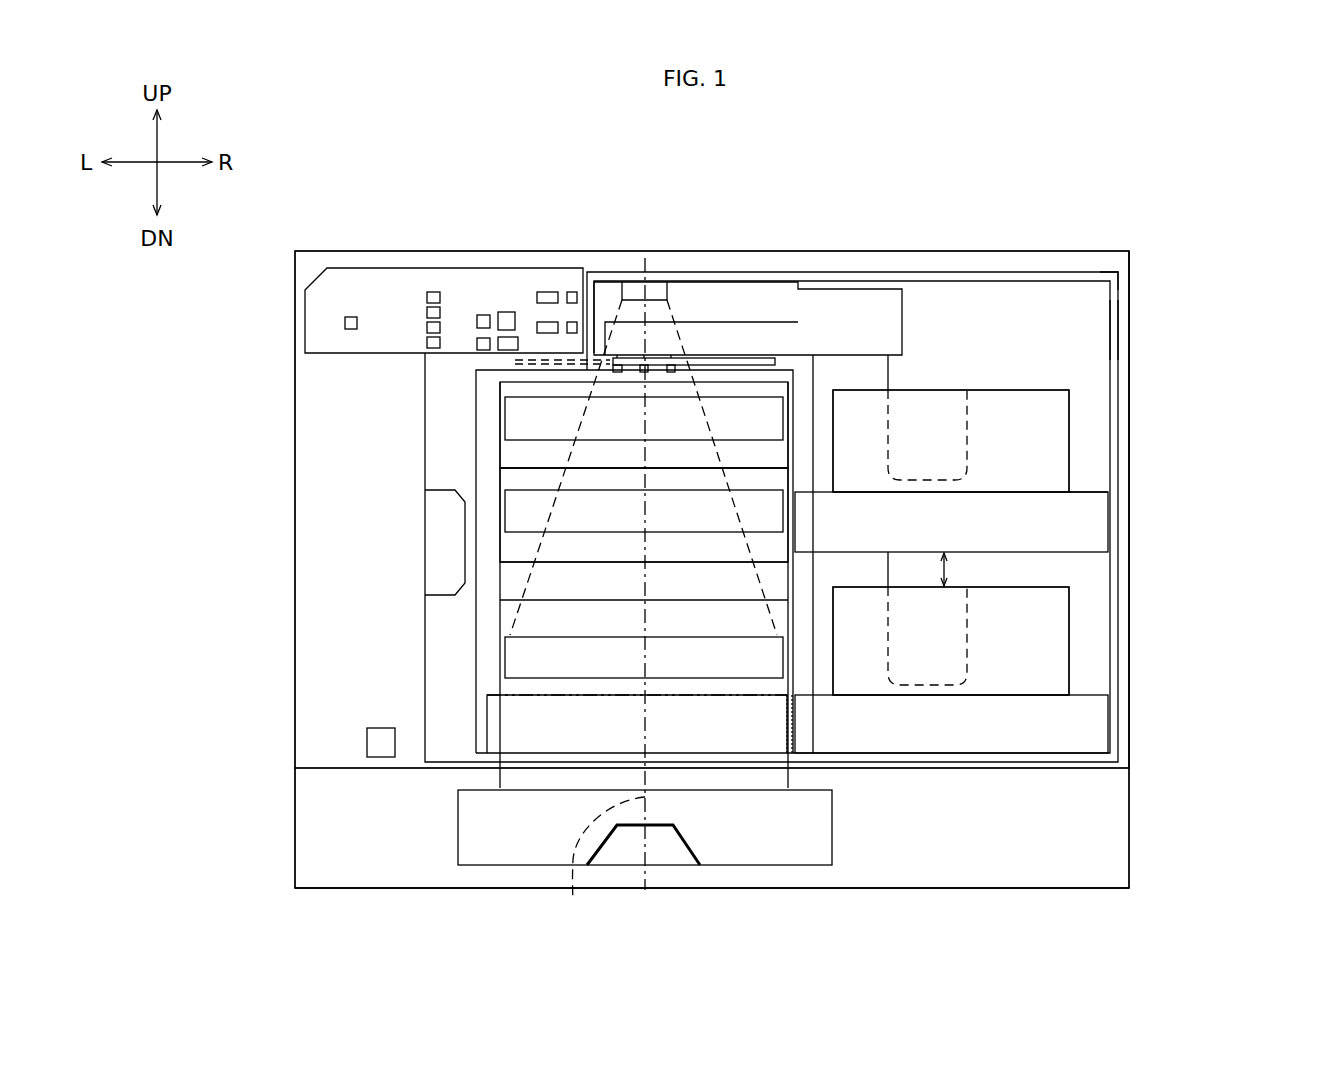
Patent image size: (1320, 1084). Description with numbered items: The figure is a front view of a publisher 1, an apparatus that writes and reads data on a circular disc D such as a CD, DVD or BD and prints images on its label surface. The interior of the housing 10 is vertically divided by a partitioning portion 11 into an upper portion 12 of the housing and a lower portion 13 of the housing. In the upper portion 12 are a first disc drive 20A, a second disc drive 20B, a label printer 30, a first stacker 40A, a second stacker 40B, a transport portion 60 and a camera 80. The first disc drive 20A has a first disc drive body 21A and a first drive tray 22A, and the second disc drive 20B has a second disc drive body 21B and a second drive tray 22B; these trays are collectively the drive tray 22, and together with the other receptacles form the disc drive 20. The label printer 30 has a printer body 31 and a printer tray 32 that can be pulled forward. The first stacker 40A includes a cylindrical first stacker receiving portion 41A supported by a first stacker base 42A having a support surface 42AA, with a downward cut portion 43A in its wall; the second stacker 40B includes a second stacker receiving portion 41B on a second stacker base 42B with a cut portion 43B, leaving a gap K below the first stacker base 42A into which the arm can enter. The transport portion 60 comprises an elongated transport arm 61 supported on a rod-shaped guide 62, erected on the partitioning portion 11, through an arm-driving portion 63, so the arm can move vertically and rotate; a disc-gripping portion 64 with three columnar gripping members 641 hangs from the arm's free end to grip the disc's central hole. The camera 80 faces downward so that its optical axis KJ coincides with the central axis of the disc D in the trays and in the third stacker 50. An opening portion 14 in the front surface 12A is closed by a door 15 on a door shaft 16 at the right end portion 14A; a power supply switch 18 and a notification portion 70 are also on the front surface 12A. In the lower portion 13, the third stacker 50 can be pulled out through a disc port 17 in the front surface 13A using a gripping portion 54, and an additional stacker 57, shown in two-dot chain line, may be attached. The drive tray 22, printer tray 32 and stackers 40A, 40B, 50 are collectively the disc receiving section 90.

The publisher 1 is at (753, 185).
The housing 10 is at (707, 251).
The partitioning portion 11 is at (1131, 763).
The upper portion of the housing 12 is at (295, 761).
The front surface of the upper portion of the housing 12A is at (327, 603).
The lower portion of the housing 13 is at (295, 832).
The front surface of the lower portion of the housing 13A is at (337, 870).
The opening portion 14 is at (1066, 287).
The right end portion of the opening portion 14A is at (1111, 271).
The door 15 is at (490, 481).
The door shaft 16 is at (1117, 345).
The disc port 17 is at (833, 807).
The power supply switch 18 is at (367, 742).
The disc drive 20 is at (547, 463).
The first disc drive 20A is at (500, 391).
The second disc drive 20B is at (500, 491).
The first disc drive body 21A is at (495, 450).
The second disc drive body 21B is at (500, 550).
The drive tray 22 is at (460, 476).
The first drive tray 22A is at (523, 417).
The second drive tray 22B is at (517, 512).
The label printer 30 is at (500, 600).
The printer body 31 is at (500, 625).
The printer tray 32 is at (513, 655).
The first stacker 40A is at (1070, 447).
The second stacker 40B is at (1070, 656).
The first stacker receiving portion 41A is at (1070, 405).
The second stacker receiving portion 41B is at (1070, 615).
The first stacker base 42A is at (1080, 533).
The support surface of the first stacker base 42AA is at (1090, 492).
The second stacker base 42B is at (1080, 737).
The cut portion 43A is at (967, 445).
The cut portion 43B is at (967, 617).
The third stacker 50 is at (712, 867).
The gripping portion 54 is at (685, 845).
The additional stacker 57 is at (487, 722).
The transport portion 60 is at (836, 289).
The transport arm 61 is at (690, 337).
The guide 62 is at (882, 377).
The arm-driving portion 63 is at (807, 358).
The disc-gripping portion 64 is at (640, 373).
The gripping member 641 is at (615, 369).
The notification portion 70 is at (365, 268).
The camera 80 is at (622, 293).
The disc receiving section 90 is at (705, 669).
The disc D is at (767, 353).
The gap K is at (954, 569).
The optical axis KJ is at (601, 873).